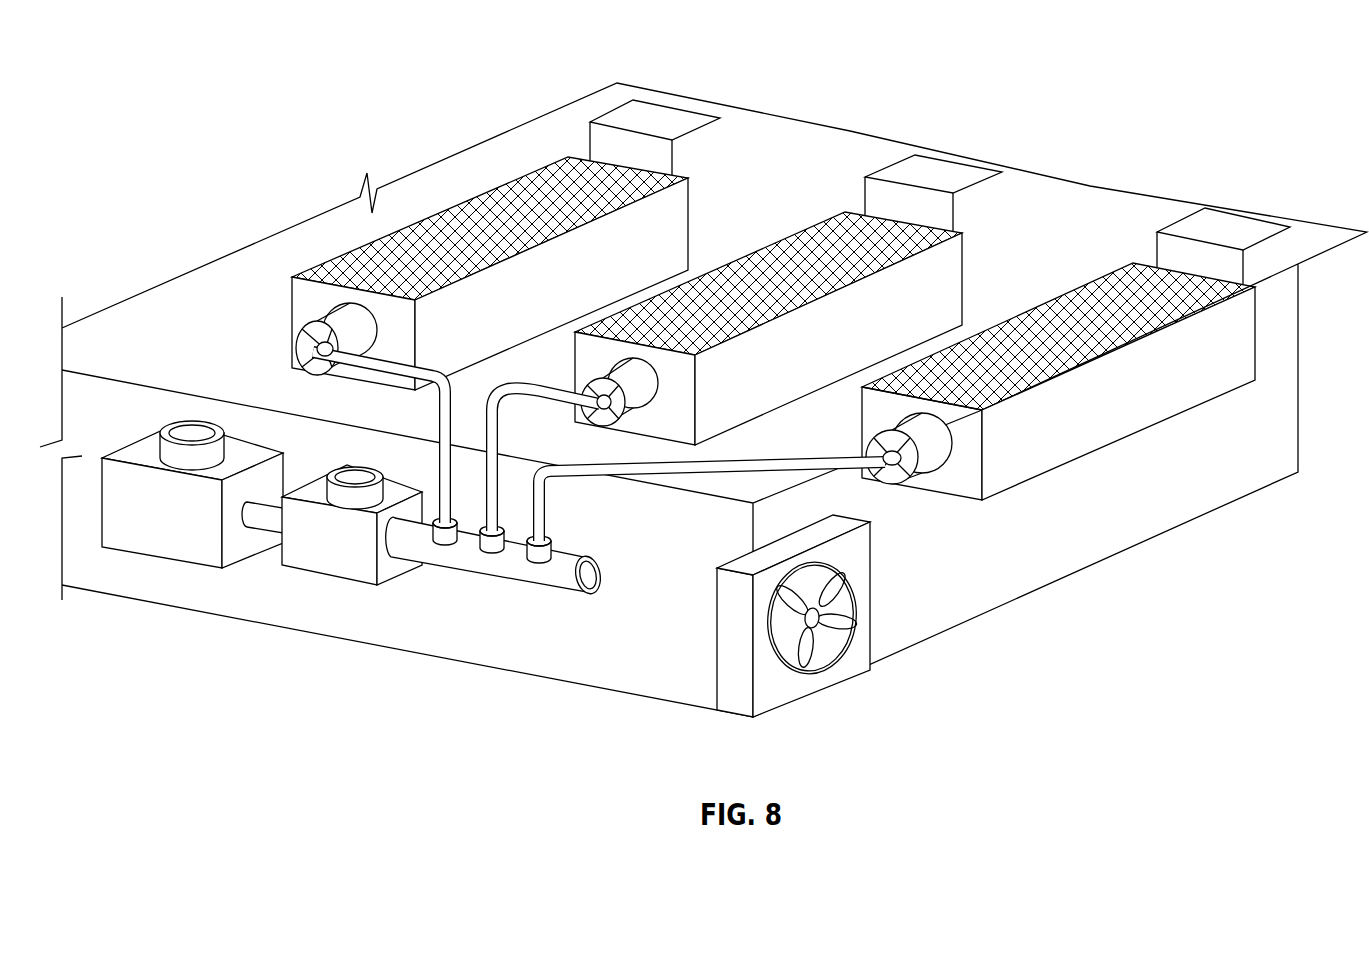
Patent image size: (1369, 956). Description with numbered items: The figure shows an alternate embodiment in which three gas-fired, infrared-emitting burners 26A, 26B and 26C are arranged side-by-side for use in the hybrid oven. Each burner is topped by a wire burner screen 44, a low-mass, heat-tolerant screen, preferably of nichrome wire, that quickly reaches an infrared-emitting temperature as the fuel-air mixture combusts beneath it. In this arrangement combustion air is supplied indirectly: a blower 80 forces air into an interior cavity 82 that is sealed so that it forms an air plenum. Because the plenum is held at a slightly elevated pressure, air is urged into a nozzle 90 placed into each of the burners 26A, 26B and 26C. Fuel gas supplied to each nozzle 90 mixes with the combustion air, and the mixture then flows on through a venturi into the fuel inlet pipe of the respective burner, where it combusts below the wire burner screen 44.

The gas-fired burner 26A is at (695, 92).
The gas-fired burner 26B is at (982, 145).
The gas-fired burner 26C is at (1258, 200).
The wire burner screen 44 is at (522, 185).
The interior cavity 82 is at (183, 290).
The blower 80 is at (853, 657).
The nozzle 90 is at (282, 327).